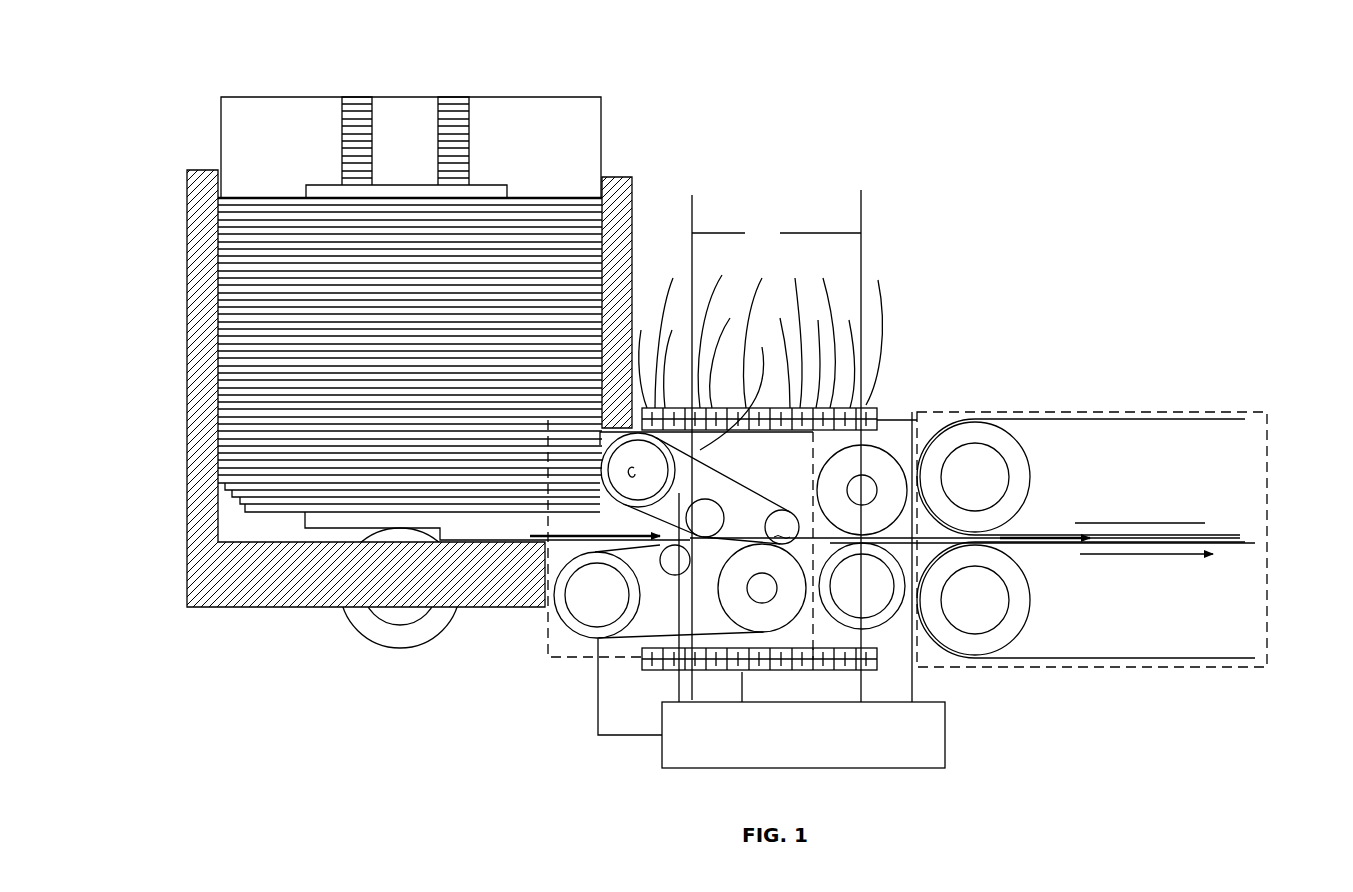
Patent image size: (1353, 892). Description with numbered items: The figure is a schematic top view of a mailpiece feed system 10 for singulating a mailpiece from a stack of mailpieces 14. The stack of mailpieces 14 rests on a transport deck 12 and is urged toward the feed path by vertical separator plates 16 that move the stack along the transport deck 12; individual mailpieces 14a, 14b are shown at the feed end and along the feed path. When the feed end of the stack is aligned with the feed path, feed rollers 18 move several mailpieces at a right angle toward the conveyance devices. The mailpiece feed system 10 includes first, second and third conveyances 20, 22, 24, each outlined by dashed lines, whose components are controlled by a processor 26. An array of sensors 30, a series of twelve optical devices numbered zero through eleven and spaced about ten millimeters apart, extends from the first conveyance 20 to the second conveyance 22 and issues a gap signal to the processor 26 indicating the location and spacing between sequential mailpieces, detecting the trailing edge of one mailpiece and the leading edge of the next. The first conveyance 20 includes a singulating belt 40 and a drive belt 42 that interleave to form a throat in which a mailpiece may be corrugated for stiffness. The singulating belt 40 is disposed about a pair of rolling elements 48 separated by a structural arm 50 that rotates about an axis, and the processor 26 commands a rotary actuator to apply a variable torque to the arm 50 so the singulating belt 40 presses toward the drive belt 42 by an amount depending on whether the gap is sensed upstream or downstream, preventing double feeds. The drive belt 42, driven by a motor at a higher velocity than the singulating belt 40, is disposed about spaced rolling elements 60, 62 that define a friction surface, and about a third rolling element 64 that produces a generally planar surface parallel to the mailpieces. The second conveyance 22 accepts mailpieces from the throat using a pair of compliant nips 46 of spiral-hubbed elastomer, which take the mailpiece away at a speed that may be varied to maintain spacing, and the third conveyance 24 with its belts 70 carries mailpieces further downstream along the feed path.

The mailpiece feed system 10 is at (1033, 160).
The transport deck 12 is at (457, 145).
The stack of mailpieces 14 is at (560, 277).
The top sheet 14a is at (530, 538).
The fed sheet 14b is at (1128, 540).
The vertical separator plates 16 is at (332, 187).
The feed rollers 18 is at (400, 635).
The first conveyance 20 is at (543, 637).
The second conveyance 22 is at (918, 425).
The third conveyance 24 is at (1097, 472).
The processor 26 is at (955, 758).
The array of sensors 30 is at (878, 400).
The singulating belt 40 is at (737, 387).
The drive belt 42 is at (650, 636).
The compliant nips 46 is at (880, 432).
The rolling elements 48 is at (603, 475).
The structural arm 50 is at (698, 492).
The rolling element 60 is at (530, 613).
The rolling element 62 is at (725, 605).
The third rolling element 64 is at (667, 573).
The transport belts 70 is at (1160, 415).